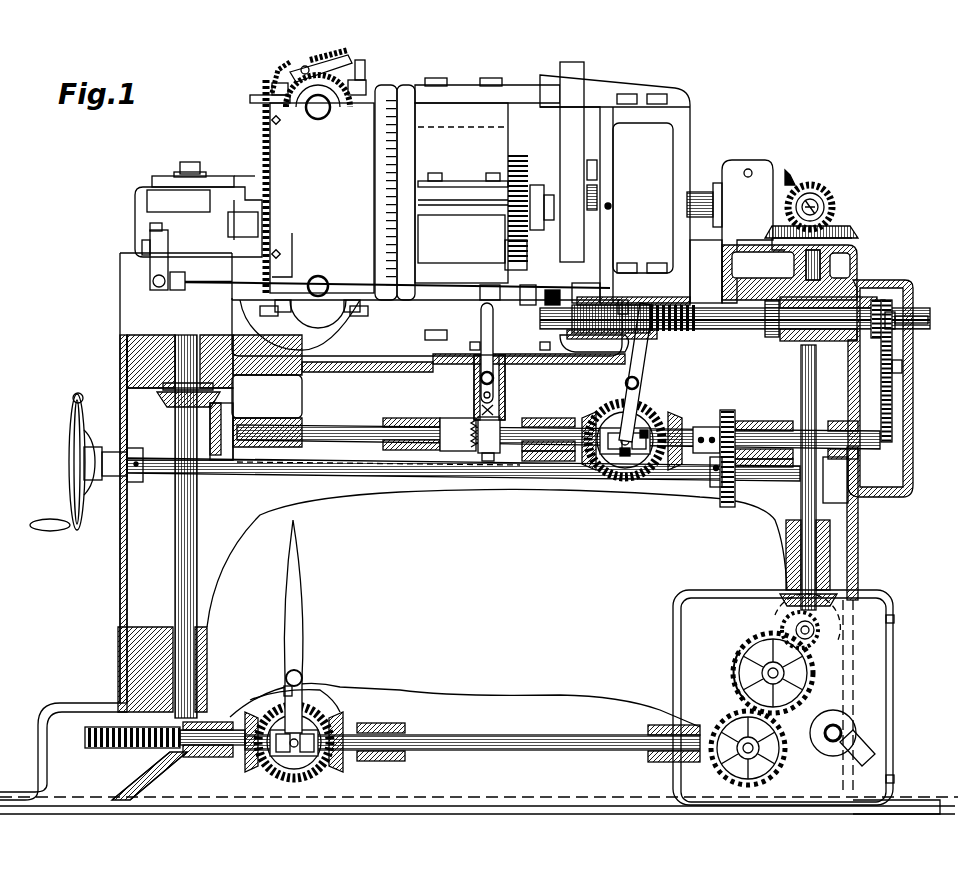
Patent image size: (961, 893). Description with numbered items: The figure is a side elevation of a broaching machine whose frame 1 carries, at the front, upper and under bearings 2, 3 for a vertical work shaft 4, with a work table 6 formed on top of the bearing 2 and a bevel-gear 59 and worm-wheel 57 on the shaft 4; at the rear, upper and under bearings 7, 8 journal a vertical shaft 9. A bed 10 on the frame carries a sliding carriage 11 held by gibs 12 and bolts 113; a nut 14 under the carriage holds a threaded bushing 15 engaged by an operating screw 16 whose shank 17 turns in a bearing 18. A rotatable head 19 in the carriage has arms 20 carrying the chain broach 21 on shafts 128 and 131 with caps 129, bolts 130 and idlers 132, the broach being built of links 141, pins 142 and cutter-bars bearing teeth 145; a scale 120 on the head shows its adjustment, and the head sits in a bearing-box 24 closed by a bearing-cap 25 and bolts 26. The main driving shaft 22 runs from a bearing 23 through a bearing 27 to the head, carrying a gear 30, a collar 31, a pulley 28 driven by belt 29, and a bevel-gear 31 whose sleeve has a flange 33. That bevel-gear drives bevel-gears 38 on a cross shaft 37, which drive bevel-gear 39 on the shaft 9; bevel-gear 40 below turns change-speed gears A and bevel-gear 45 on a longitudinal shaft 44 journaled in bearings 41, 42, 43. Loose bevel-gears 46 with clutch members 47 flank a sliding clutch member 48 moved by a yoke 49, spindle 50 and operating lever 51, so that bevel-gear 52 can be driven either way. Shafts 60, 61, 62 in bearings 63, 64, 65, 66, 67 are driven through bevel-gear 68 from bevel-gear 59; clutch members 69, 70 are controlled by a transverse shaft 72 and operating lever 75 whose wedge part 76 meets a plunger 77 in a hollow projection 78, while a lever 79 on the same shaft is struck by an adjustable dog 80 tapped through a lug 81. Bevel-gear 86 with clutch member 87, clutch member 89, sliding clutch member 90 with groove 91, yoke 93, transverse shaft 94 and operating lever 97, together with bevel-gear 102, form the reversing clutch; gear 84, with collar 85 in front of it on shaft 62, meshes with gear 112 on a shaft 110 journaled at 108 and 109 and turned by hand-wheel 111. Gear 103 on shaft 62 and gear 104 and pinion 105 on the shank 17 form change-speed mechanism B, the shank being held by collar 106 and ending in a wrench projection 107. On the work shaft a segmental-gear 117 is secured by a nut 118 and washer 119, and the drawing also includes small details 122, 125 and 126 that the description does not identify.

The frame 1 is at (397, 435).
The upper bearing 2 is at (393, 526).
The under bearing 3 is at (205, 625).
The work shaft 4 is at (184, 530).
The work table 6 is at (143, 250).
The upper bearing 7 is at (828, 267).
The under bearing 8 is at (828, 565).
The shaft 9 is at (816, 383).
The bed 10 is at (716, 300).
The carriage 11 is at (590, 290).
The gibs 12 is at (410, 330).
The nut 14 is at (594, 340).
The bushing 15 is at (580, 328).
The operating screw 16 is at (688, 305).
The shank 17 is at (740, 330).
The bearing 18 is at (792, 342).
The head 19 is at (510, 140).
The arms 20 is at (312, 194).
The chain broach 21 is at (315, 56).
The main or driving shaft 22 is at (593, 185).
The bearing 23 is at (733, 192).
The bearing-box 24 is at (505, 235).
The bearing-cap 25 is at (461, 136).
The bolts 26 is at (490, 180).
The bearing 27 is at (636, 195).
The pulley 28 is at (590, 160).
The belt 29 is at (575, 85).
The gear 30 is at (523, 160).
The bevel-gear 31 is at (608, 212).
The collar or flange 33 is at (718, 185).
The shaft 37 is at (832, 206).
The bevel-gears 38 is at (835, 192).
The bevel-gear 39 is at (855, 231).
The bevel-gear 40 is at (835, 597).
The bearing 41 is at (210, 757).
The bearing 42 is at (398, 757).
The bearing 43 is at (660, 765).
The shaft 44 is at (518, 748).
The bevel-gear 45 is at (730, 715).
The bevel-gears 46 is at (251, 712).
The clutch member 47 is at (266, 762).
The clutch member 48 is at (310, 770).
The yoke 49 is at (312, 695).
The spindle 50 is at (302, 676).
The operating lever 51 is at (294, 612).
The bevel-gear 52 is at (283, 690).
The worm-wheel 57 is at (100, 745).
The bevel-gear 59 is at (163, 405).
The shaft 60 is at (340, 428).
The shaft 61 is at (553, 430).
The shaft 62 is at (760, 437).
The bearing 63 is at (270, 475).
The bearing 64 is at (420, 420).
The bearing 65 is at (565, 478).
The bearing 66 is at (772, 480).
The bearing 67 is at (830, 432).
The bevel-gear 68 is at (211, 458).
The clutch member 69 is at (455, 446).
The clutch member 70 is at (480, 446).
The transverse shaft 72 is at (482, 378).
The operating lever 75 is at (482, 322).
The wedge-shaped part 76 is at (496, 406).
The plunger 77 is at (482, 411).
The hollow projection 78 is at (489, 462).
The lever 79 is at (482, 290).
The dog 80 is at (555, 290).
The lug 81 is at (525, 278).
The gear 84 is at (731, 428).
The collar 85 is at (700, 432).
The bevel-gear 86 is at (598, 428).
The clutch member 87 is at (598, 475).
The clutch member 89 is at (665, 472).
The clutch member 90 is at (625, 455).
The annular groove 91 is at (612, 465).
The yoke 93 is at (640, 403).
The transverse shaft 94 is at (620, 385).
The operating lever 97 is at (632, 345).
The bevel-gear 102 is at (640, 482).
The gear 103 is at (860, 502).
The gear 104 is at (882, 300).
The pinion 105 is at (900, 312).
The collar 106 is at (766, 316).
The projection 107 is at (920, 324).
The front bearing 108 is at (113, 470).
The rear bearing 109 is at (830, 482).
The shaft 110 is at (360, 475).
The hand-wheel 111 is at (78, 396).
The gear 112 is at (727, 505).
The bolts 113 is at (138, 482).
The segmental-gear 117 is at (152, 183).
The nut 118 is at (190, 160).
The washer 119 is at (178, 185).
The scale 120 is at (390, 205).
The block 122 is at (510, 248).
The bearing 125 is at (540, 193).
The rail 126 is at (510, 221).
The shaft 128 is at (320, 114).
The cap 129 is at (350, 70).
The bolts 130 is at (272, 90).
The shaft 131 is at (322, 280).
The idlers 132 is at (323, 78).
The links 141 is at (362, 68).
The pin 142 is at (285, 66).
The teeth 145 is at (264, 112).
The change-speed gears A is at (762, 673).
The change-speed mechanism B is at (896, 398).